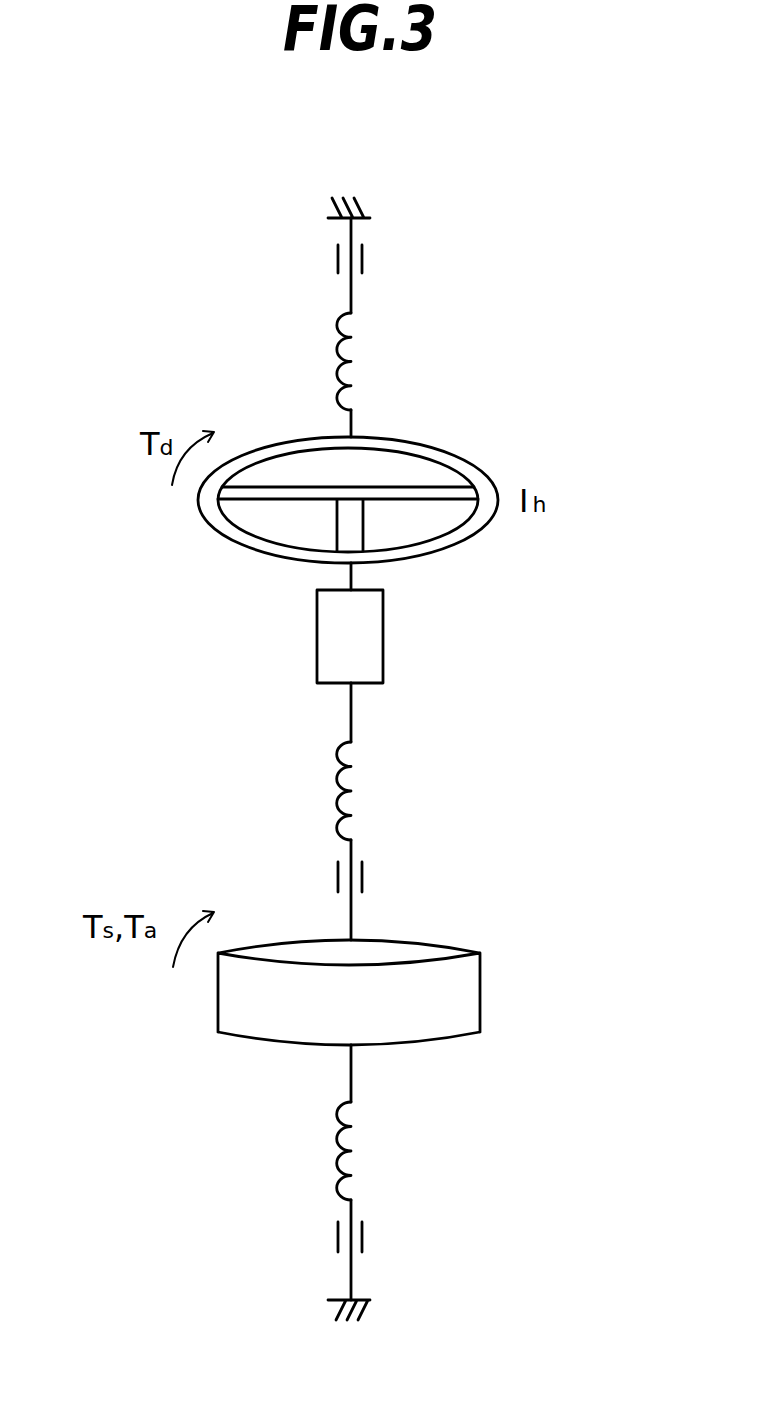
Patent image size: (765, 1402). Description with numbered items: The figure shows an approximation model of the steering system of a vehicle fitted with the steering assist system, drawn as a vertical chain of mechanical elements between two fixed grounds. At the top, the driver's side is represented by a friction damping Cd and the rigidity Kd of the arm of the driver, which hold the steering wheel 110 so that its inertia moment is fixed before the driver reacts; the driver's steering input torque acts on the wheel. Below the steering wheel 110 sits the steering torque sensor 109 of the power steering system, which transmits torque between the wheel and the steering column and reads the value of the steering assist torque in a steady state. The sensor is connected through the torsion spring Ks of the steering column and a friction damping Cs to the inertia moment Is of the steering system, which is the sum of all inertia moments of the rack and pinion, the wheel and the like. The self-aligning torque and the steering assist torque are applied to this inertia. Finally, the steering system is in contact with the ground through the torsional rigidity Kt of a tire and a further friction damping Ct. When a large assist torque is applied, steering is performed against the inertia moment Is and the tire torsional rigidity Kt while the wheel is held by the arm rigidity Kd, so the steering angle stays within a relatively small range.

The steering wheel 110 is at (452, 455).
The steering torque sensor 109 is at (383, 638).
The friction damping Cd is at (375, 263).
The rigidity of the arm of the driver Kd is at (369, 361).
The torsion spring of the steering column Ks is at (370, 791).
The friction damping Cs is at (376, 881).
The inertia moment of the steering system Is is at (373, 992).
The torsional rigidity of a tire Kt is at (369, 1151).
The friction damping Ct is at (378, 1241).